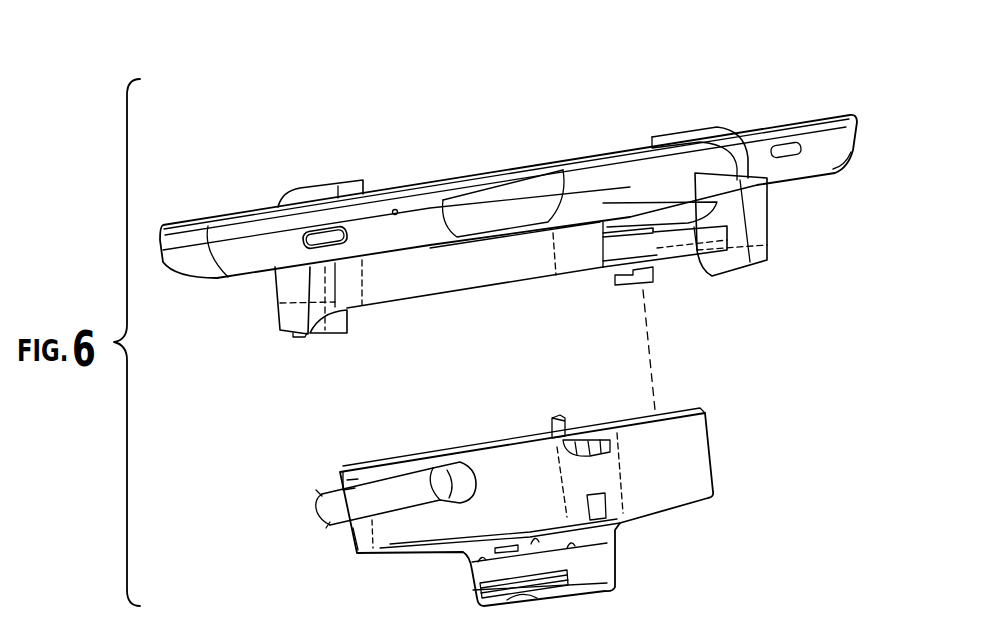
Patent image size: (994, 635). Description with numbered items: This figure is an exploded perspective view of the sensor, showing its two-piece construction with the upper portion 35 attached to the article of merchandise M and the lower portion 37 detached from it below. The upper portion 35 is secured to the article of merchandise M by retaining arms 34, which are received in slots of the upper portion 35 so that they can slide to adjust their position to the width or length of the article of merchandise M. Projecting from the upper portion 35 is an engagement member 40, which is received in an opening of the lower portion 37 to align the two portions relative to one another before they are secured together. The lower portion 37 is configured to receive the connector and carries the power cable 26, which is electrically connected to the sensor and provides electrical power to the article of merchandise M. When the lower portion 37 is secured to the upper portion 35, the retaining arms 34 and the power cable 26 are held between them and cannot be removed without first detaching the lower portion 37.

The article of merchandise M is at (849, 113).
The retaining arm 34 is at (297, 190).
The upper portion 35 is at (488, 278).
The engagement member 40 is at (641, 283).
The power cable 26 is at (320, 490).
The lower portion 37 is at (695, 458).